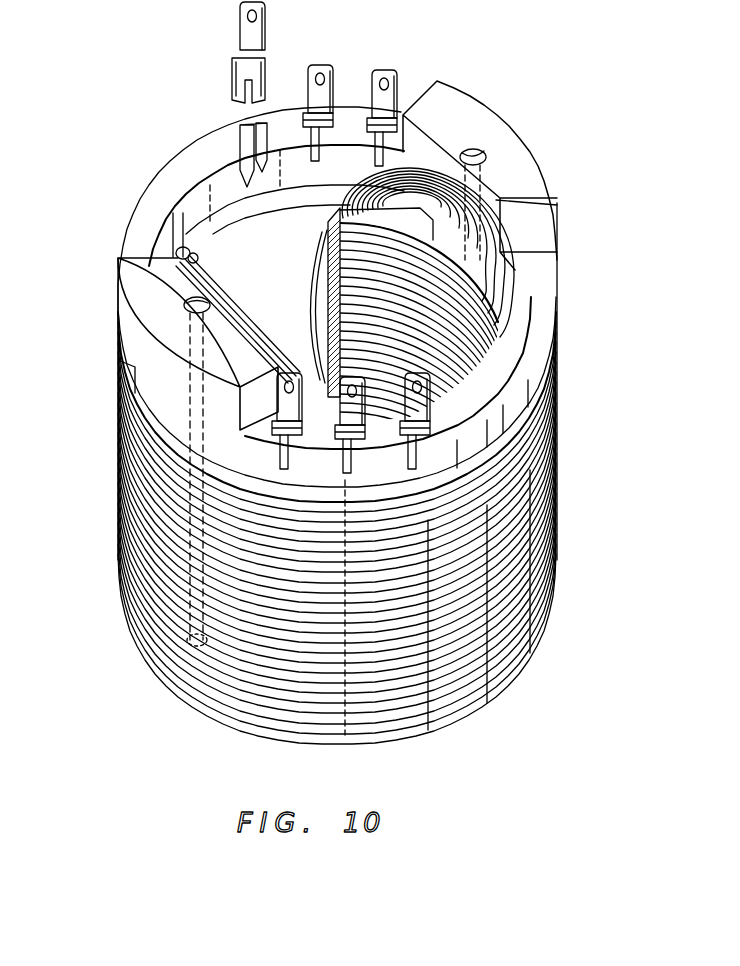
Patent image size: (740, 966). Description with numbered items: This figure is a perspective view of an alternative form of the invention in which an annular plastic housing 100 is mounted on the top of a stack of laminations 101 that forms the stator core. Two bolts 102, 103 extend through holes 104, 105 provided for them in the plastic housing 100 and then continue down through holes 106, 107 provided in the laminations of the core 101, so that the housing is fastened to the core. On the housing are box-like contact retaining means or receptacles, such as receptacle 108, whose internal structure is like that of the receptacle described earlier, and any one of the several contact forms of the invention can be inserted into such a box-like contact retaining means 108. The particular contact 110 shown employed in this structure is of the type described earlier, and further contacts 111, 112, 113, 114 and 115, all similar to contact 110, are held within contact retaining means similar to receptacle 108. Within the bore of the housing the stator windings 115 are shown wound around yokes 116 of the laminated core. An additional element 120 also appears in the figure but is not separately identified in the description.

The annular plastic housing 100 is at (507, 365).
The stack of laminations 101 is at (540, 513).
The bolt 102 is at (120, 257).
The bolt 103 is at (480, 148).
The hole 104 is at (197, 332).
The hole 105 is at (473, 197).
The hole 106 is at (195, 573).
The hole 107 is at (462, 340).
The box-like contact retaining means 108 is at (263, 140).
The contact 110 is at (250, 38).
The contact 111 is at (323, 78).
The contact 112 is at (398, 78).
The contact 113 is at (280, 378).
The contact 114 is at (360, 432).
The stator windings 115 is at (200, 262).
The yokes 116 is at (340, 240).
The terminal tab 120 is at (422, 402).